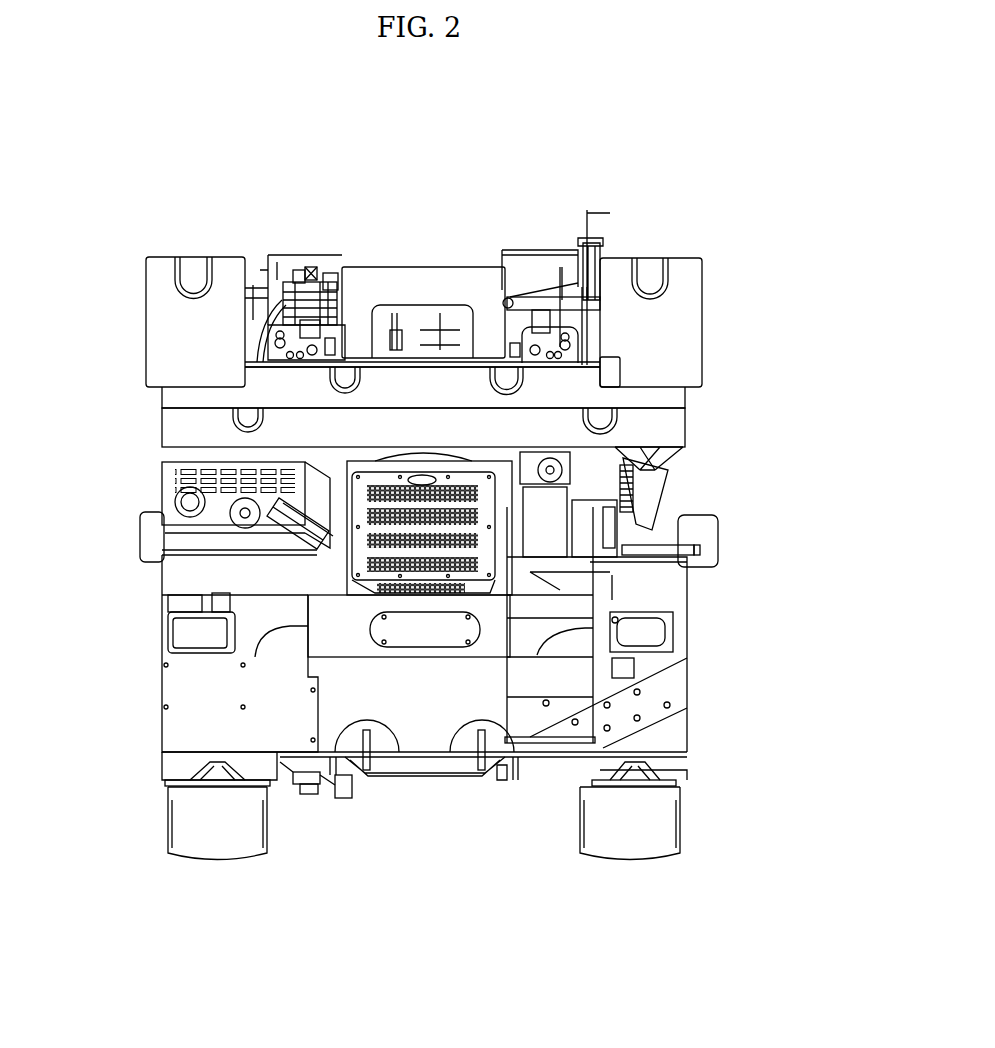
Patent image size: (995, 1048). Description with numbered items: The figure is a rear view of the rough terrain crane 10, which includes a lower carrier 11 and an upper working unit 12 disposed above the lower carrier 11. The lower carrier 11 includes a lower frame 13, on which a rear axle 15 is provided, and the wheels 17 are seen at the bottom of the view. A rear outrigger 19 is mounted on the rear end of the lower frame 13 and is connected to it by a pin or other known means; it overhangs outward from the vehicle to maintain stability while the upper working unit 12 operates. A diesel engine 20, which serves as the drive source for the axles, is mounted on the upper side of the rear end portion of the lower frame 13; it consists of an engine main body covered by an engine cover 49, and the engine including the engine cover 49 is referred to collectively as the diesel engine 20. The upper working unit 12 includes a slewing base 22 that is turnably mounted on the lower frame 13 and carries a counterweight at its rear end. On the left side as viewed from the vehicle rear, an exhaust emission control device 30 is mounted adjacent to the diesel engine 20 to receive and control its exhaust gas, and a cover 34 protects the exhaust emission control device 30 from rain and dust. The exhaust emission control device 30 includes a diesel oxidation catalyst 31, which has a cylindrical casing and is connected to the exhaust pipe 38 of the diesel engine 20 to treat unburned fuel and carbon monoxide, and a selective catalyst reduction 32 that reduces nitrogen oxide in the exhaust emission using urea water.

The rough terrain crane 10 is at (137, 233).
The lower carrier 11 is at (718, 596).
The upper working unit 12 is at (717, 279).
The lower frame 13 is at (482, 648).
The rear axle 15 is at (143, 805).
The wheel 17 is at (218, 852).
The rear outrigger 19 is at (693, 765).
The diesel engine 20 is at (452, 456).
The slewing base 22 is at (667, 418).
The exhaust emission control device 30 is at (240, 462).
The diesel oxidation catalyst 31 is at (248, 525).
The selective catalyst reduction 32 is at (196, 523).
The cover 34 is at (170, 479).
The exhaust pipe 38 is at (293, 540).
The engine cover 49 is at (475, 478).